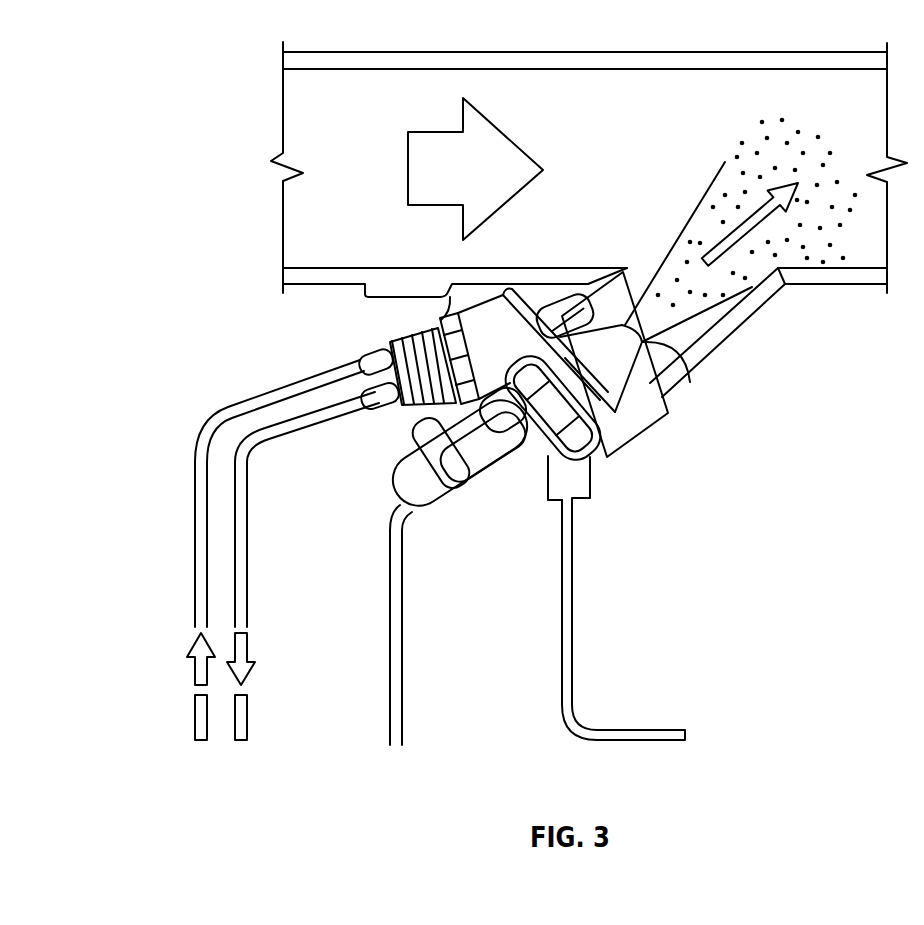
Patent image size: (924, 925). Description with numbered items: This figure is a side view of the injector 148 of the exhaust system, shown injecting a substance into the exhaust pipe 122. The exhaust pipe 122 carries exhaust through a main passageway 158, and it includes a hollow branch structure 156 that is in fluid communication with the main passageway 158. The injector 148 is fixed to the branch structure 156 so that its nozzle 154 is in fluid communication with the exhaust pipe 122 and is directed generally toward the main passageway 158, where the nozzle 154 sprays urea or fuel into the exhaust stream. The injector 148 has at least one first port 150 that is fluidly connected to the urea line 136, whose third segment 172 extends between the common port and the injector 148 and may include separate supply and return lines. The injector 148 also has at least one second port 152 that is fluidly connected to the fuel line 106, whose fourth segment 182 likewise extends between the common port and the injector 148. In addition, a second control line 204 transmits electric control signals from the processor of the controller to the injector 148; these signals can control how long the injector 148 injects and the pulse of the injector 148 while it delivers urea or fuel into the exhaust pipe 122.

The exhaust pipe 122 is at (648, 52).
The main passageway 158 is at (625, 151).
The hollow branch structure 156 is at (627, 274).
The nozzle 154 is at (678, 355).
The injector 148 is at (651, 441).
The first port 150 is at (436, 336).
The urea line 136 is at (257, 487).
The third segment 172 is at (195, 575).
The fuel line 106 is at (385, 697).
The fourth segment 182 is at (403, 648).
The second port 152 is at (533, 425).
The second control line 204 is at (573, 578).